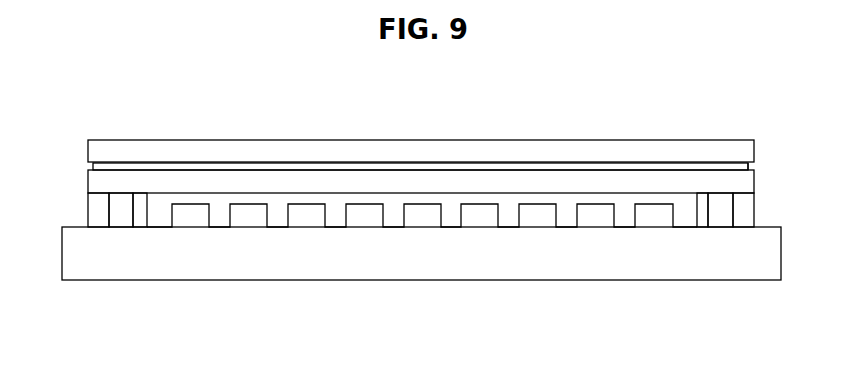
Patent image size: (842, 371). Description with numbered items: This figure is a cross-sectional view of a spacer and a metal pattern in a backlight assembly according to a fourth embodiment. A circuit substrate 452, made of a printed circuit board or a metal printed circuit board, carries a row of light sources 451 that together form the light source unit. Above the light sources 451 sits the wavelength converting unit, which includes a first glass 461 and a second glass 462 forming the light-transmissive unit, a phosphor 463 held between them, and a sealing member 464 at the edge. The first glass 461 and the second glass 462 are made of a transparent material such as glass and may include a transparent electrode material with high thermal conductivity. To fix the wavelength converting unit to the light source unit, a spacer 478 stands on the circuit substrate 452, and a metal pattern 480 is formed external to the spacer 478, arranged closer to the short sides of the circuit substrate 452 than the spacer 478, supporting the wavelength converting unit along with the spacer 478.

The light source 451 is at (422, 216).
The circuit substrate 452 is at (327, 268).
The first glass 461 is at (577, 152).
The second glass 462 is at (690, 182).
The phosphor 463 is at (633, 160).
The sealing member 464 is at (737, 167).
The spacer 478 is at (142, 218).
The metal pattern 480 is at (100, 213).